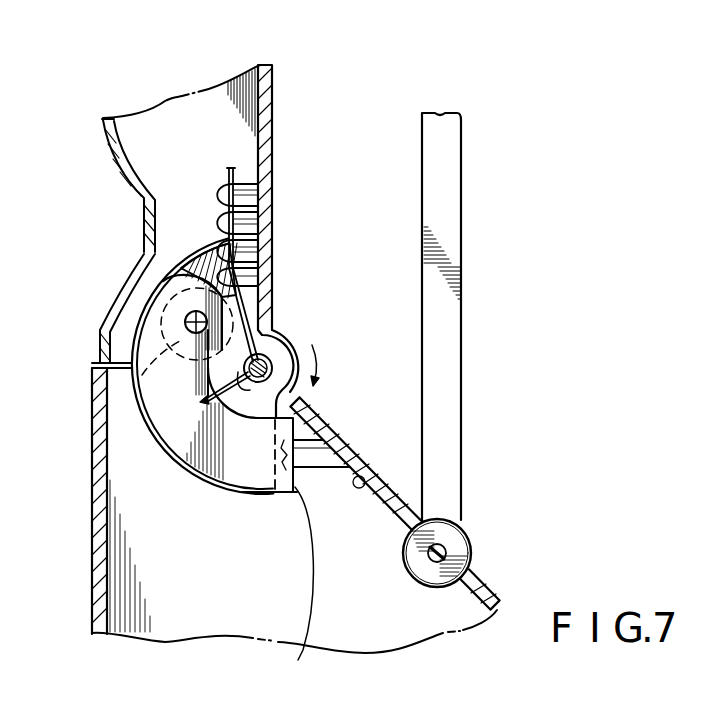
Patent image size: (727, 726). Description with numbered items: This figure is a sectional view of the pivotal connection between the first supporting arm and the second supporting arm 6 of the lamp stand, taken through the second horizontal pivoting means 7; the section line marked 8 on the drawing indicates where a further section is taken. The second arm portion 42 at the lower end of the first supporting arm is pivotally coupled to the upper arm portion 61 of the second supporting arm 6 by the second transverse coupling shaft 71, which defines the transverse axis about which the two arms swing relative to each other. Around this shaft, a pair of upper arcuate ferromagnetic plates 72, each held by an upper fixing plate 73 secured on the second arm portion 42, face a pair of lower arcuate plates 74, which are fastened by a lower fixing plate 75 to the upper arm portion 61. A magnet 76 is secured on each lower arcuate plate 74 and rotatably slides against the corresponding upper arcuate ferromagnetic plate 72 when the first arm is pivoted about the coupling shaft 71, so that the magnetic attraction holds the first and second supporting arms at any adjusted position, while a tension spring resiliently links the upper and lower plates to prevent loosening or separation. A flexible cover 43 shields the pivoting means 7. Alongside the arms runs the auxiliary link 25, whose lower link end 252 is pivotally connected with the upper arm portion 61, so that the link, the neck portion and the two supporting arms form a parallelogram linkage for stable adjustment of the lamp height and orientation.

The second supporting arm 6 is at (90, 535).
The second horizontal pivoting means 7 is at (139, 312).
The section line 8- 8 is at (177, 95).
The auxiliary link 25 is at (450, 197).
The second arm portion 42 is at (270, 134).
The flexible cover 43 is at (110, 132).
The upper arm portion 61 is at (364, 480).
The second transverse coupling shaft 71 is at (266, 354).
The upper arcuate ferromagnetic plate 72 is at (151, 255).
The upper fixing plate 73 is at (237, 229).
The lower arcuate plate 74 is at (207, 445).
The lower fixing plate 75 is at (278, 553).
The magnet 76 is at (92, 372).
The lower link end 252 is at (471, 541).